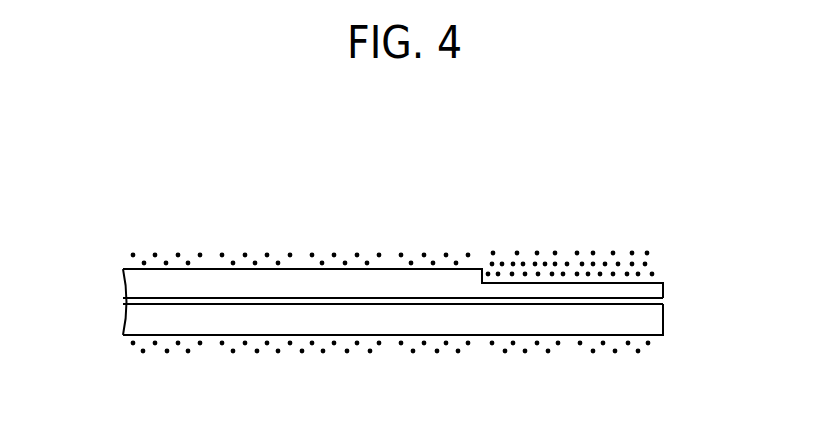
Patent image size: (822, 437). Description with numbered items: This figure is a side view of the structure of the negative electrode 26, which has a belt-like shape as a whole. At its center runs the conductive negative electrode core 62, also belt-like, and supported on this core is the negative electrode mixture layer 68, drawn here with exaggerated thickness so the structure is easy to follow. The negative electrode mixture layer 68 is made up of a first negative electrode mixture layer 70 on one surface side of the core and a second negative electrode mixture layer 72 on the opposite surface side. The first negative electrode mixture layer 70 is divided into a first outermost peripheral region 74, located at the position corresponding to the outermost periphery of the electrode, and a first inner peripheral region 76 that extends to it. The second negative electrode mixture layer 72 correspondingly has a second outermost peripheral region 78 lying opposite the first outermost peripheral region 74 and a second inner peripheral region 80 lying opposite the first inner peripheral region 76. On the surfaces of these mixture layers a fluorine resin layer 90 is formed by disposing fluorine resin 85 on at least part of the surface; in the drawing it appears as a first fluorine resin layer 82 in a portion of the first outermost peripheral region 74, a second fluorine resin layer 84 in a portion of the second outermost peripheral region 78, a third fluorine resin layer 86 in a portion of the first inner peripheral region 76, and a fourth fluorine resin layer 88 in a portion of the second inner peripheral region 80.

The negative electrode 26 is at (496, 176).
The negative electrode core 62 is at (242, 301).
The negative electrode mixture layer 68 is at (745, 257).
The first negative electrode mixture layer 70 is at (673, 294).
The second negative electrode mixture layer 72 is at (673, 321).
The first outermost peripheral region 74 is at (607, 282).
The first inner peripheral region 76 is at (395, 268).
The second outermost peripheral region 78 is at (620, 336).
The second inner peripheral region 80 is at (378, 336).
The first fluorine resin layer 82 is at (663, 240).
The second fluorine resin layer 84 is at (663, 368).
The fluorine resin 85 is at (438, 353).
The third fluorine resin layer 86 is at (478, 240).
The fourth fluorine resin layer 88 is at (478, 368).
The fluorine resin layer 90 is at (110, 258).